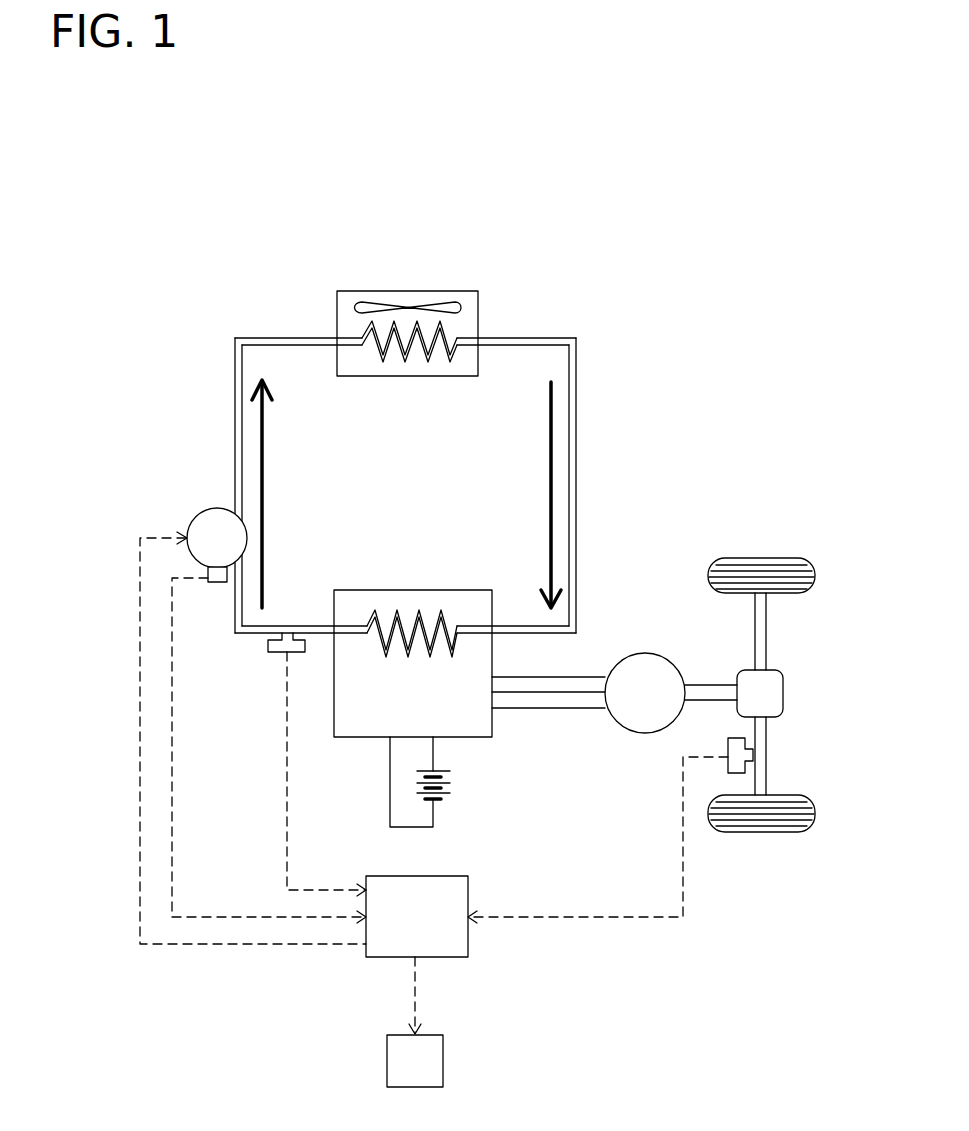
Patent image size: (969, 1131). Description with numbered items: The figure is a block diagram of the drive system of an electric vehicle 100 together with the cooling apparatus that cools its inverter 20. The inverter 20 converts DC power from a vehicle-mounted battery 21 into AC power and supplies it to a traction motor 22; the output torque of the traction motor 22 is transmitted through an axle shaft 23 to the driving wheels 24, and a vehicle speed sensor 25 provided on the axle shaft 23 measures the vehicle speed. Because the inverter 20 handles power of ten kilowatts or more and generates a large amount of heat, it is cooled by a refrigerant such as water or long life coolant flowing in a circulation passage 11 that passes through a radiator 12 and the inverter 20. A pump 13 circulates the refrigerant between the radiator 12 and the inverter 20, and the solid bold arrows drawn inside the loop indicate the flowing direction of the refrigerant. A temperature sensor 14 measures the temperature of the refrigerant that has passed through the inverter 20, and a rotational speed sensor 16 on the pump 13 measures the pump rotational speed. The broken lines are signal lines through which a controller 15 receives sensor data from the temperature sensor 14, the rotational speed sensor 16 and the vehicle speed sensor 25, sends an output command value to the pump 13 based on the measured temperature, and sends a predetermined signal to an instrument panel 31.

The electric vehicle 100 is at (195, 237).
The circulation passage 11 is at (556, 338).
The radiator 12 is at (451, 291).
The pump 13 is at (208, 511).
The temperature sensor 14 is at (276, 653).
The controller 15 is at (473, 957).
The rotational speed sensor 16 is at (213, 583).
The inverter 20 is at (420, 590).
The vehicle-mounted battery 21 is at (443, 795).
The traction motor 22 is at (648, 655).
The axle shaft 23 is at (770, 640).
The driving wheels 24 is at (778, 558).
The vehicle speed sensor 25 is at (728, 740).
The instrument panel 31 is at (445, 1076).